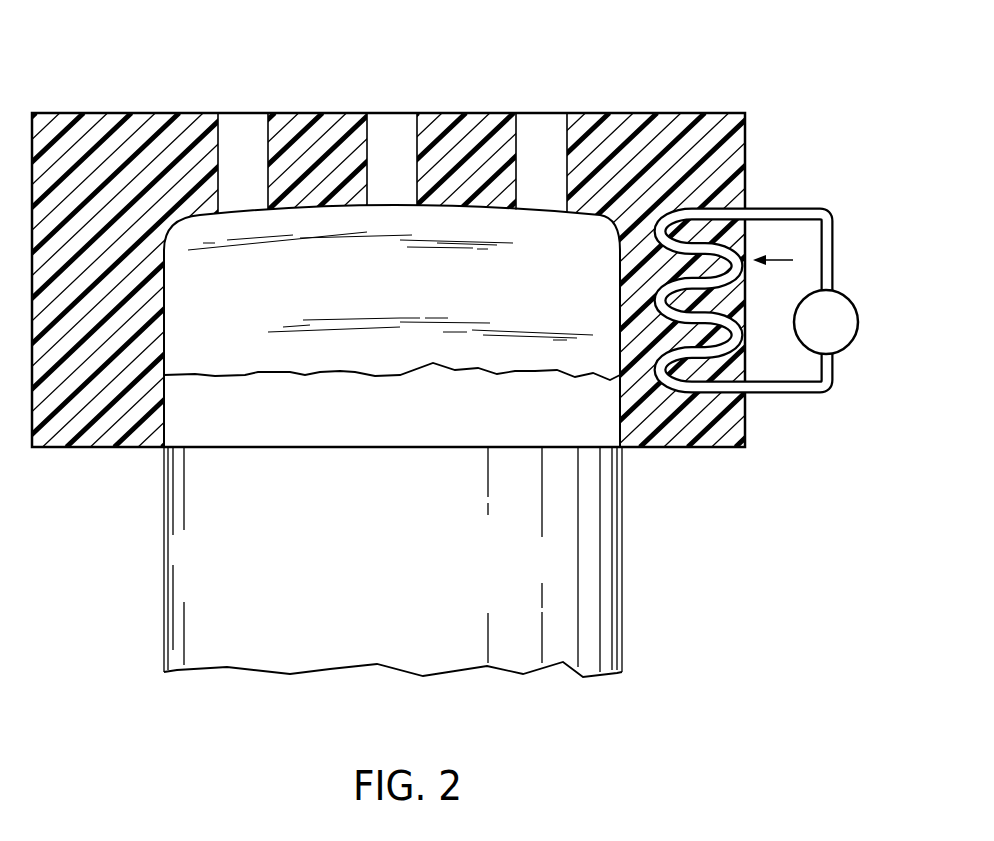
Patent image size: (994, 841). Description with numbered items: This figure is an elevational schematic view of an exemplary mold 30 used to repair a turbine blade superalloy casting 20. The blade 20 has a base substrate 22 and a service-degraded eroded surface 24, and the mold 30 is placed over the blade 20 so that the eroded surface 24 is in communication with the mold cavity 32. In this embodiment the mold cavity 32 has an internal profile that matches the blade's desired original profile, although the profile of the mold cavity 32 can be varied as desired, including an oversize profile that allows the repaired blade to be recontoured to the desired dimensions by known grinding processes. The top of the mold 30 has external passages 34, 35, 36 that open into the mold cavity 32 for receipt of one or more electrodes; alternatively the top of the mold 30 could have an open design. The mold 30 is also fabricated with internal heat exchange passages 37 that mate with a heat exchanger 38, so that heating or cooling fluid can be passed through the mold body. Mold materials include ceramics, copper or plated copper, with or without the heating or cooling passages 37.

The turbine blade superalloy casting 20 is at (647, 619).
The base substrate 22 is at (582, 532).
The eroded surface 24 is at (270, 373).
The mold 30 is at (777, 274).
The mold cavity 32 is at (178, 222).
The external passage 34 is at (239, 140).
The external passage 35 is at (397, 150).
The external passage 36 is at (543, 137).
The internal heat exchange passages 37 is at (706, 208).
The heat exchanger 38 is at (800, 396).